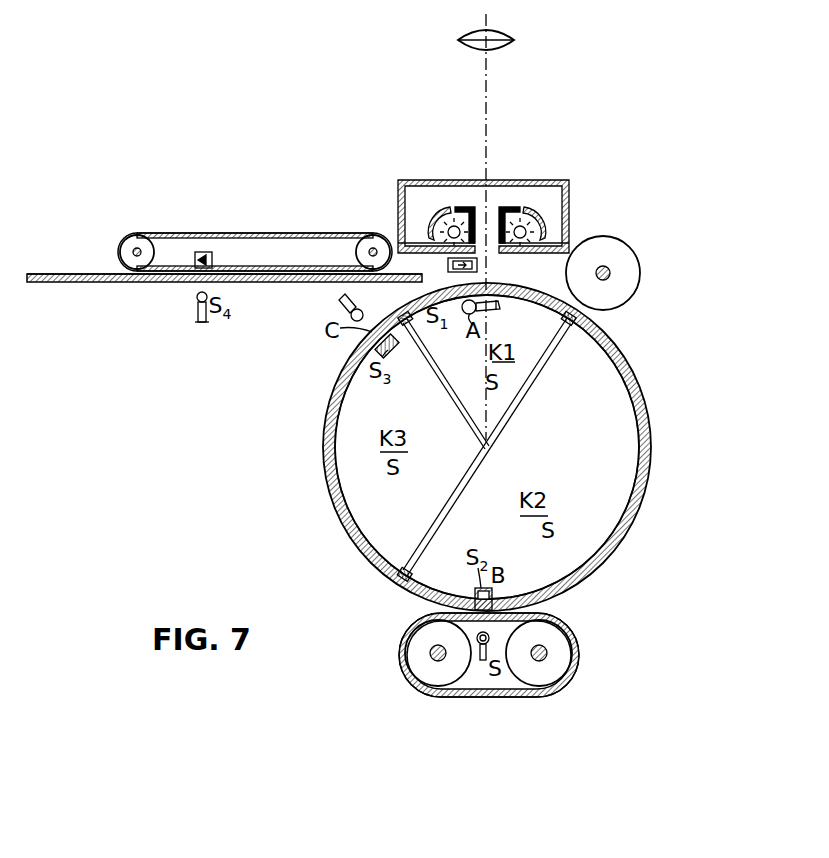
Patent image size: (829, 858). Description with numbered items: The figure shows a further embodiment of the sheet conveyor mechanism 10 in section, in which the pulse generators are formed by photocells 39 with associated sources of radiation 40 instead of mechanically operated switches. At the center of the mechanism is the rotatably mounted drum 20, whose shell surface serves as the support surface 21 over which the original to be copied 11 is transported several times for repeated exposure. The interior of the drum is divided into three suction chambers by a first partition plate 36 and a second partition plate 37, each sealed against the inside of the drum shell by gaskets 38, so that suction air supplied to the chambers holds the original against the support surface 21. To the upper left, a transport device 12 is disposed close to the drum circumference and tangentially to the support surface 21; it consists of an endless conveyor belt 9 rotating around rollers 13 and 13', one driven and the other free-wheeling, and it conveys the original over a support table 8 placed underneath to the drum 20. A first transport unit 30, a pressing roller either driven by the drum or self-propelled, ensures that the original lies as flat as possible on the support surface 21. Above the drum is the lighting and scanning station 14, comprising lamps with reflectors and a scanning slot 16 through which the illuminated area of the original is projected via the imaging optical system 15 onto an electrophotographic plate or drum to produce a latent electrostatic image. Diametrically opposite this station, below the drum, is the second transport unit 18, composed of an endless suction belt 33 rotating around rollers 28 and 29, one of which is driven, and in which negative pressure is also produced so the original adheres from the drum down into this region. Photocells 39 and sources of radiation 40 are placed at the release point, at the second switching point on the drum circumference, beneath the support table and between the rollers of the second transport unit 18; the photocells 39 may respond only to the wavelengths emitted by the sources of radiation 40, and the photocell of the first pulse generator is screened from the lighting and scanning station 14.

The support table 8 is at (88, 284).
The endless conveyor belt 9 is at (196, 232).
The sheet conveyor mechanism 10 is at (465, 447).
The original to be copied 11 is at (70, 273).
The transport device 12 is at (249, 225).
The roller 13 is at (130, 230).
The roller 13' is at (364, 230).
The lighting and scanning station 14 is at (510, 181).
The imaging optical system 15 is at (505, 34).
The scanning slot 16 is at (486, 216).
The second transport unit 18 is at (490, 676).
The drum 20 is at (628, 366).
The support surface 21 is at (645, 411).
The roller 28 is at (560, 665).
The roller 29 is at (418, 660).
The first transport unit 30 is at (626, 259).
The endless suction belt 33 is at (530, 699).
The first partition plate 36 is at (540, 362).
The second partition plate 37 is at (435, 372).
The gaskets 38 is at (418, 331).
The photocells 39 is at (480, 265).
The sources of radiation 40 is at (497, 312).